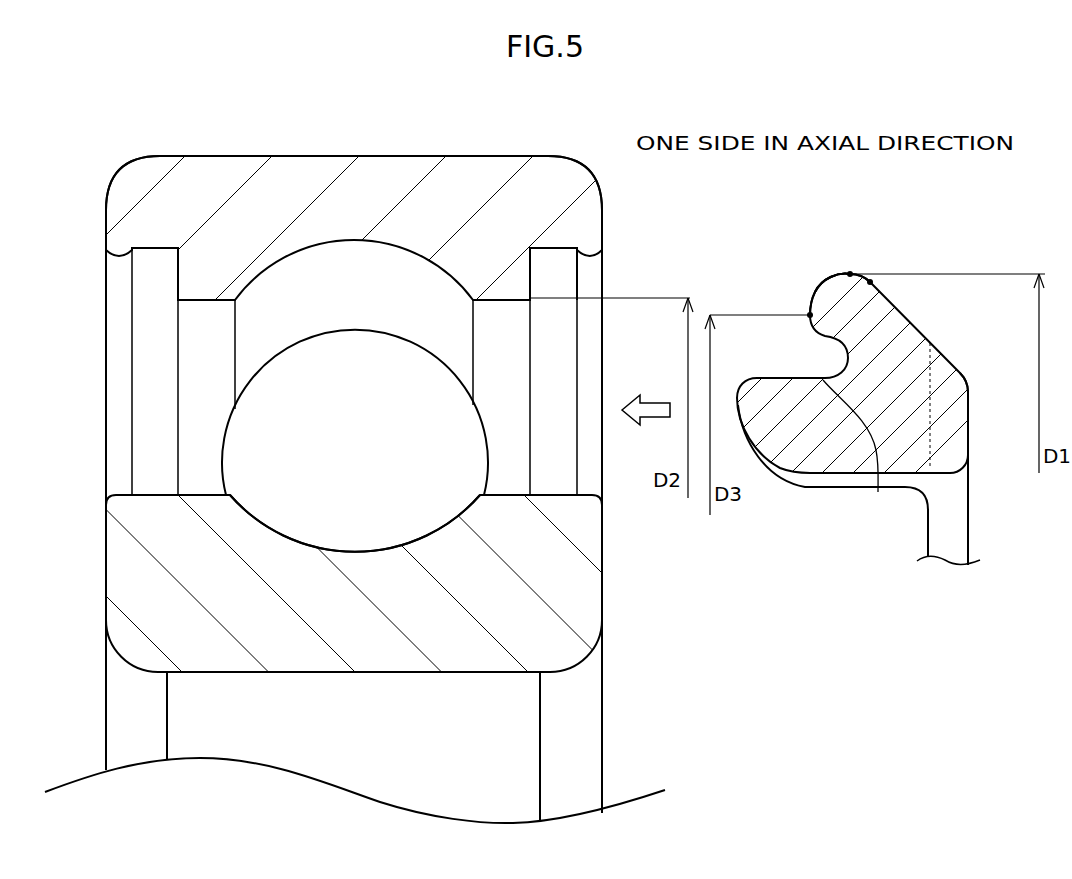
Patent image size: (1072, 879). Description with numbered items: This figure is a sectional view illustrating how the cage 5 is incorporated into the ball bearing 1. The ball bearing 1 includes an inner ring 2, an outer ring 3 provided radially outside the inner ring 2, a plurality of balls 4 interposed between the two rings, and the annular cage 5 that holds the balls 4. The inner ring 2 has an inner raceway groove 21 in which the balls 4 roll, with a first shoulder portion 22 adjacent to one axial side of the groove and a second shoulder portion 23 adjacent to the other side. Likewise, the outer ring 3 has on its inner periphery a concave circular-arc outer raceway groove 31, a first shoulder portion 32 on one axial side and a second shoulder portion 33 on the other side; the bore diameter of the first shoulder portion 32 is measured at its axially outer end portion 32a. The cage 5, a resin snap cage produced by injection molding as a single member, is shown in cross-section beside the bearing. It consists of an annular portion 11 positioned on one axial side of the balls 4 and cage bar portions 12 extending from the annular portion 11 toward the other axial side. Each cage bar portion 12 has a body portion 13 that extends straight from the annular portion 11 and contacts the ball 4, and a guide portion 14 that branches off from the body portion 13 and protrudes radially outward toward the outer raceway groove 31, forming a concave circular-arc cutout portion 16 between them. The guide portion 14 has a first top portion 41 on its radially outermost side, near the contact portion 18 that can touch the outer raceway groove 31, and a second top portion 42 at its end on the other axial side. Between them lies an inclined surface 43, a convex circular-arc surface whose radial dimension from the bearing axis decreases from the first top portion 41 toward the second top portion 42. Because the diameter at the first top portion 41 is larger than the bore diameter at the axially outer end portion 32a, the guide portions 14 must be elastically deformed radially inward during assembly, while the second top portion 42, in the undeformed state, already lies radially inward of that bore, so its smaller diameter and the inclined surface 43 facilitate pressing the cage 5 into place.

The ball bearing 1 is at (165, 152).
The inner ring 2 is at (106, 537).
The outer ring 3 is at (106, 223).
The balls 4 is at (325, 378).
The cage 5 is at (925, 326).
The annular portion 11 is at (970, 437).
The cage bar portion 12 is at (772, 465).
The body portion 13 is at (837, 437).
The guide portion 14 is at (833, 315).
The cutout portion 16 is at (857, 454).
The contact portion 18 is at (871, 280).
The inner raceway groove 21 is at (255, 513).
The first shoulder portion 22 is at (555, 510).
The second shoulder portion 23 is at (152, 512).
The outer raceway groove 31 is at (255, 300).
The first shoulder portion 32 is at (503, 282).
The axially outer end portion 32a is at (530, 300).
The second shoulder portion 33 is at (205, 282).
The first top portion 41 is at (850, 273).
The second top portion 42 is at (810, 316).
The inclined surface 43 is at (827, 278).